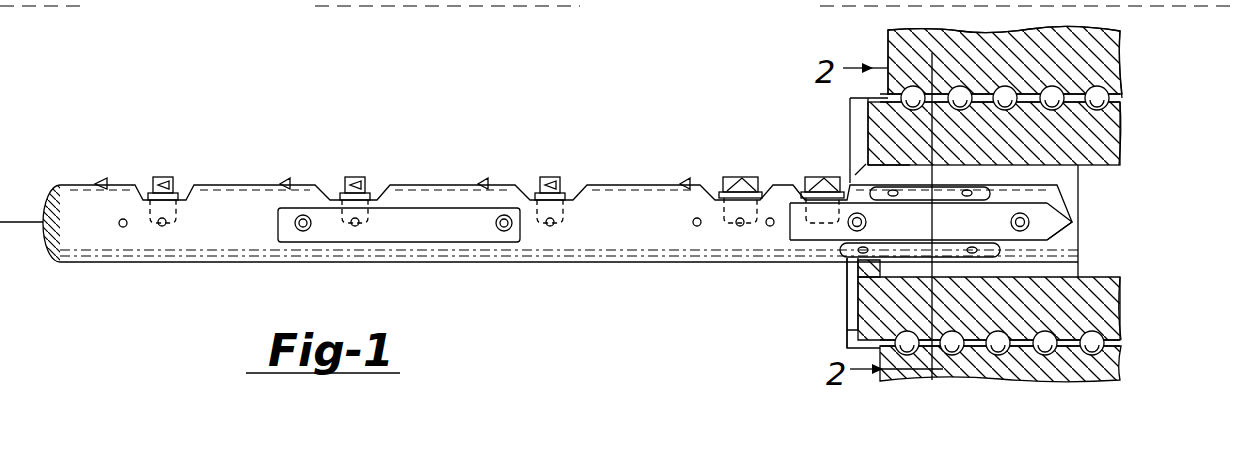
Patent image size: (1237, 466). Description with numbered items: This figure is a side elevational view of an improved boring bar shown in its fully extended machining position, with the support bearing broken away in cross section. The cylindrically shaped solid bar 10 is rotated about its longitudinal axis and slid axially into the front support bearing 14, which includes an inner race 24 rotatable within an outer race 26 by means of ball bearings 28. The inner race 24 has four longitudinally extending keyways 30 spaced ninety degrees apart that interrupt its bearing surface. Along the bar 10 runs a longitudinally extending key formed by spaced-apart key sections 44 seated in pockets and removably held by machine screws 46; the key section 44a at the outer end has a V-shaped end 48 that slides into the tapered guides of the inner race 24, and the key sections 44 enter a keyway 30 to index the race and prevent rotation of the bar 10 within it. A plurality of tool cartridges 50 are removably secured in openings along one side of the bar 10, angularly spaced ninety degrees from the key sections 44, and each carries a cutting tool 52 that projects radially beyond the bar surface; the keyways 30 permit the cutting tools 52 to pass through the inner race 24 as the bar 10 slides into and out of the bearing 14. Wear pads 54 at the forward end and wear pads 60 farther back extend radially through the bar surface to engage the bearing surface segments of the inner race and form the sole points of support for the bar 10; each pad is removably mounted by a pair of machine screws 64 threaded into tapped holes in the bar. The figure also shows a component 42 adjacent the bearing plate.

The bar 10 is at (605, 234).
The front support bearing 14 is at (1139, 109).
The inner race 24 is at (978, 333).
The outer race 26 is at (1100, 64).
The ball bearings 28 is at (1102, 87).
The keyways 30 is at (860, 162).
The end plate 42 is at (846, 303).
The key sections 44 is at (410, 222).
The key section at outer end 44a is at (790, 224).
The machine screws 46 is at (503, 215).
The V-shaped end 48 is at (1062, 206).
The tool cartridges 50 is at (188, 195).
The cutting tool 52 is at (163, 177).
The wear pads 54 is at (942, 190).
The wear pads 60 is at (840, 251).
The machine screws 64 is at (972, 190).